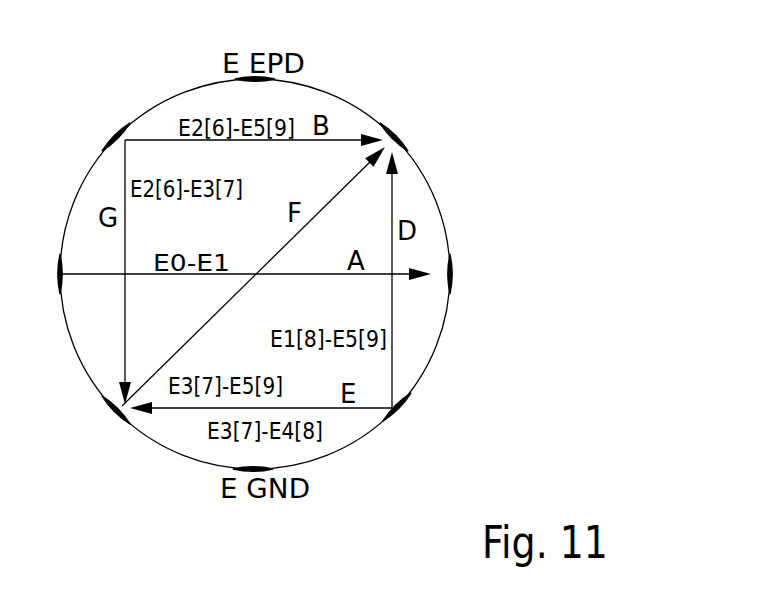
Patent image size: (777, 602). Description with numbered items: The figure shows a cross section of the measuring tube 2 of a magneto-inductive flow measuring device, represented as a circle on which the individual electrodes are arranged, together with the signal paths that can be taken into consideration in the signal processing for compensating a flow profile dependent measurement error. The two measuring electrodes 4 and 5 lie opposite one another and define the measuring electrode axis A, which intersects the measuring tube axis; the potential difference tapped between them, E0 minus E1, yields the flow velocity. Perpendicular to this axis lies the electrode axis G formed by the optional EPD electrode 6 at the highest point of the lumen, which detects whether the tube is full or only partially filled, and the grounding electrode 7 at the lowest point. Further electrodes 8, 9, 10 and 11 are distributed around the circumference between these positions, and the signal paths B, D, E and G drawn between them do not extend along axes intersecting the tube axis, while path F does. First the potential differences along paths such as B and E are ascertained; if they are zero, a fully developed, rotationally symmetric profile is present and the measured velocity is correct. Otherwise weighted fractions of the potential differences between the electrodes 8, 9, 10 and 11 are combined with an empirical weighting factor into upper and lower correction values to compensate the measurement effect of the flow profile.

The measuring tube 2 is at (447, 222).
The measuring electrode 4 is at (453, 287).
The measuring electrode 5 is at (58, 262).
The EPD electrode 6 is at (308, 84).
The grounding electrode 7 is at (213, 465).
The electrode 8 is at (420, 383).
The electrode 9 is at (405, 147).
The electrode 10 is at (120, 130).
The electrode 11 is at (127, 420).